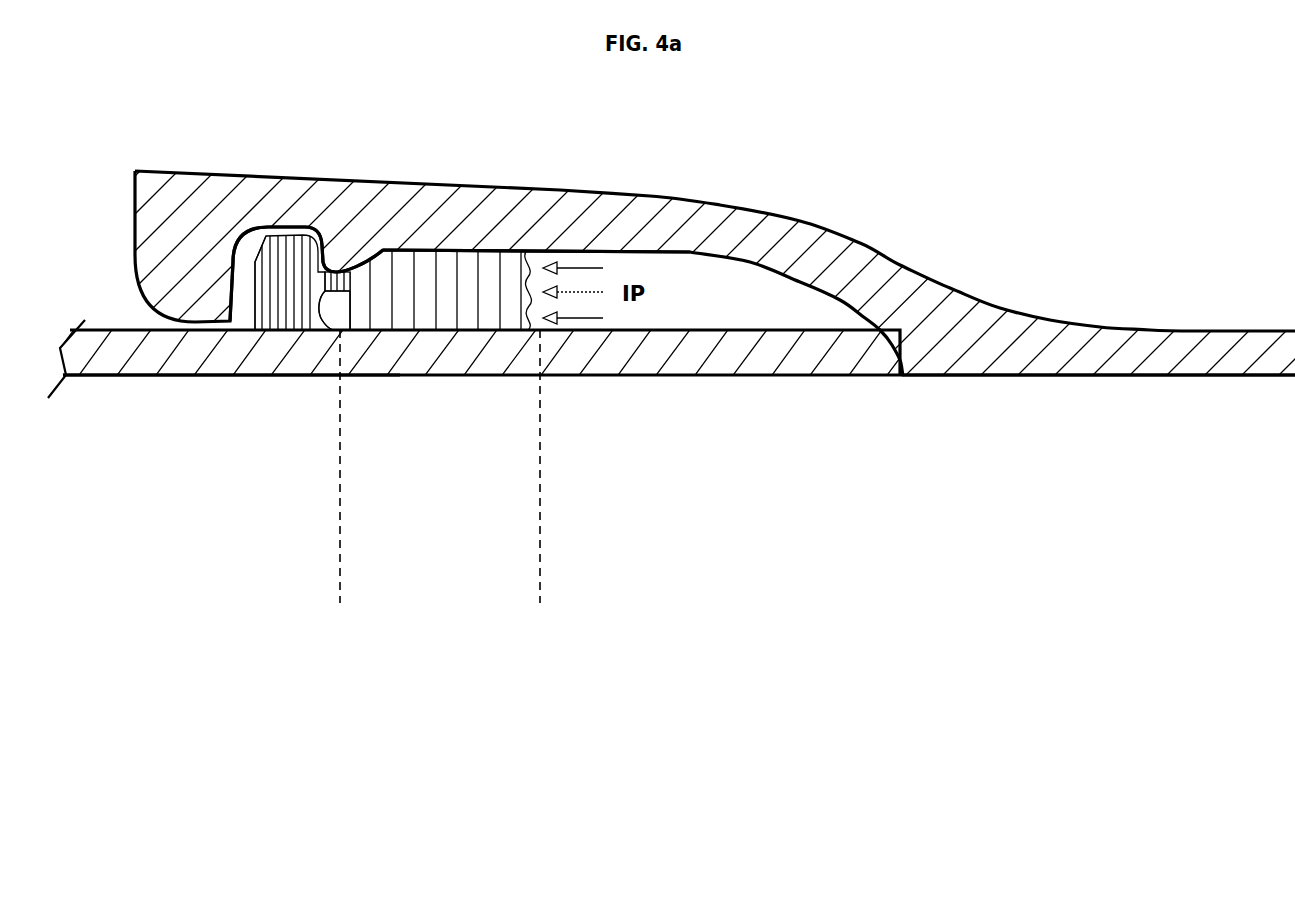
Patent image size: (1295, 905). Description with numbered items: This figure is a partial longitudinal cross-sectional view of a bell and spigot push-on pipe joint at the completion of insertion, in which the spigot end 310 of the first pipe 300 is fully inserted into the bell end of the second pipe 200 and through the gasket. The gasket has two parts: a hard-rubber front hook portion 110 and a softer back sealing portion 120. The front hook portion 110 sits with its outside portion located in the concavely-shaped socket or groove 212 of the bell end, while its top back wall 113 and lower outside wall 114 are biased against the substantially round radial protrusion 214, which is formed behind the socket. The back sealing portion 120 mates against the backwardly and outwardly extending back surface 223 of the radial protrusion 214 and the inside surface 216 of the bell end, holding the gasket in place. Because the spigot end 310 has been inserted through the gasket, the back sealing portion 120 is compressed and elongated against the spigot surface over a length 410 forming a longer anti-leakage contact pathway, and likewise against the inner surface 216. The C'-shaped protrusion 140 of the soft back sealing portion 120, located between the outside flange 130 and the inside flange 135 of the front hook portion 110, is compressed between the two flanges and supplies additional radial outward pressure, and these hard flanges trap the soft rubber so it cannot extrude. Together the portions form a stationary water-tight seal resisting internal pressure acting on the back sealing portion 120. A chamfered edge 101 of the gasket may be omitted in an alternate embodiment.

The second pipe 200 is at (797, 199).
The chamfered edge 101 is at (262, 255).
The front hook portion 110 is at (283, 252).
The socket or groove 212 is at (291, 225).
The substantially round radial protrusion 214 is at (333, 269).
The backwardly and outwardly extending back surface 223 is at (335, 270).
The inside surface of the bell end 216 is at (495, 248).
The back sealing portion 120 is at (508, 263).
The first pipe 300 is at (607, 377).
The spigot end 310 is at (115, 376).
The top back wall 113 is at (318, 256).
The lower outside wall 114 is at (327, 294).
The inside flange 135 is at (333, 292).
The outside flange 130 is at (350, 290).
The C'-shaped protrusion 140 is at (333, 297).
The length of compressed back sealing portion 410 is at (540, 587).